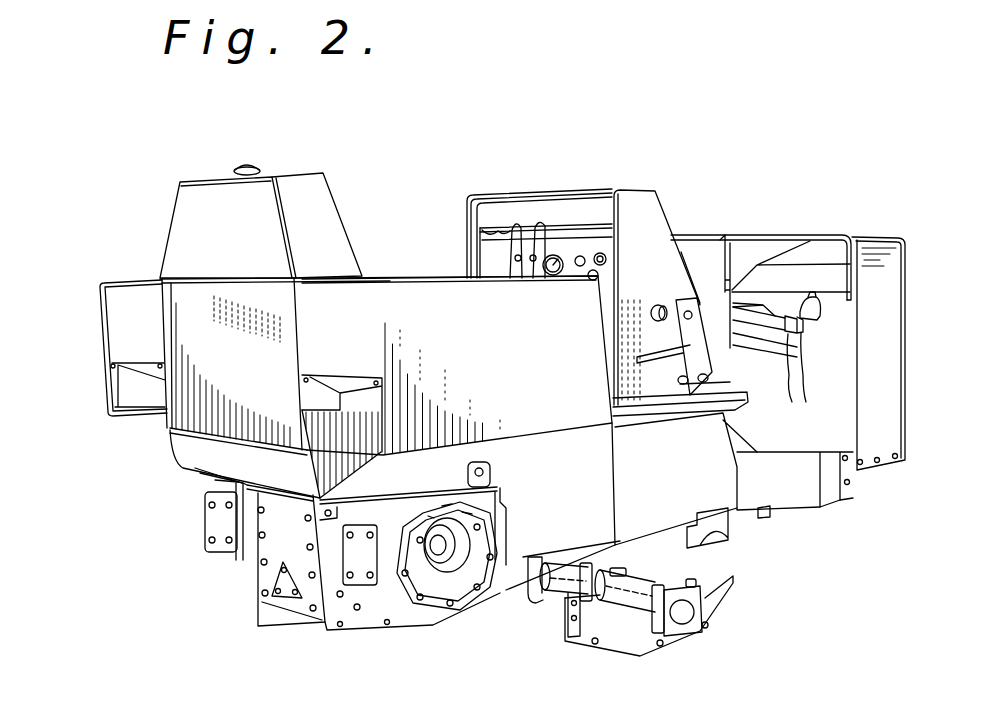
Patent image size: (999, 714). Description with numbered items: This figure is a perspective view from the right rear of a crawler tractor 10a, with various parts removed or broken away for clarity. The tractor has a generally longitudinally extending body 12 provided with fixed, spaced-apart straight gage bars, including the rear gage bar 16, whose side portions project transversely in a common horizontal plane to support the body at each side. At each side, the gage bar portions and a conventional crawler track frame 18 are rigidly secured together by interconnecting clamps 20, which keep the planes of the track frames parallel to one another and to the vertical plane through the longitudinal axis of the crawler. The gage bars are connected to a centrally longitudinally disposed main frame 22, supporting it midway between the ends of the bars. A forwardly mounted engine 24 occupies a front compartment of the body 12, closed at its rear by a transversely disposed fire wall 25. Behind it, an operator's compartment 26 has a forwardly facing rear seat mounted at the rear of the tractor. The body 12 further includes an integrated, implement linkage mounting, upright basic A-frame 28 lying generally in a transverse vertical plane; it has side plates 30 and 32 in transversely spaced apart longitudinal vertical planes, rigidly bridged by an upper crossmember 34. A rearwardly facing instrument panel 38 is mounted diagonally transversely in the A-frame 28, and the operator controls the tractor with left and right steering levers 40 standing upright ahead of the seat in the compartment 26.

The crawler tractor 10a is at (885, 290).
The body 12 is at (127, 322).
The rear gage bar 16 is at (558, 574).
The crawler track frame 18 is at (612, 650).
The clamps 20 is at (607, 575).
The main frame 22 is at (408, 595).
The engine 24 is at (787, 362).
The fire wall 25 is at (703, 248).
The operator's compartment 26 is at (323, 200).
The A-frame 28 is at (468, 192).
The side plate 30 is at (643, 207).
The side plate 32 is at (460, 256).
The upper crossmember 34 is at (572, 207).
The instrument panel 38 is at (558, 273).
The steering levers 40 is at (532, 260).